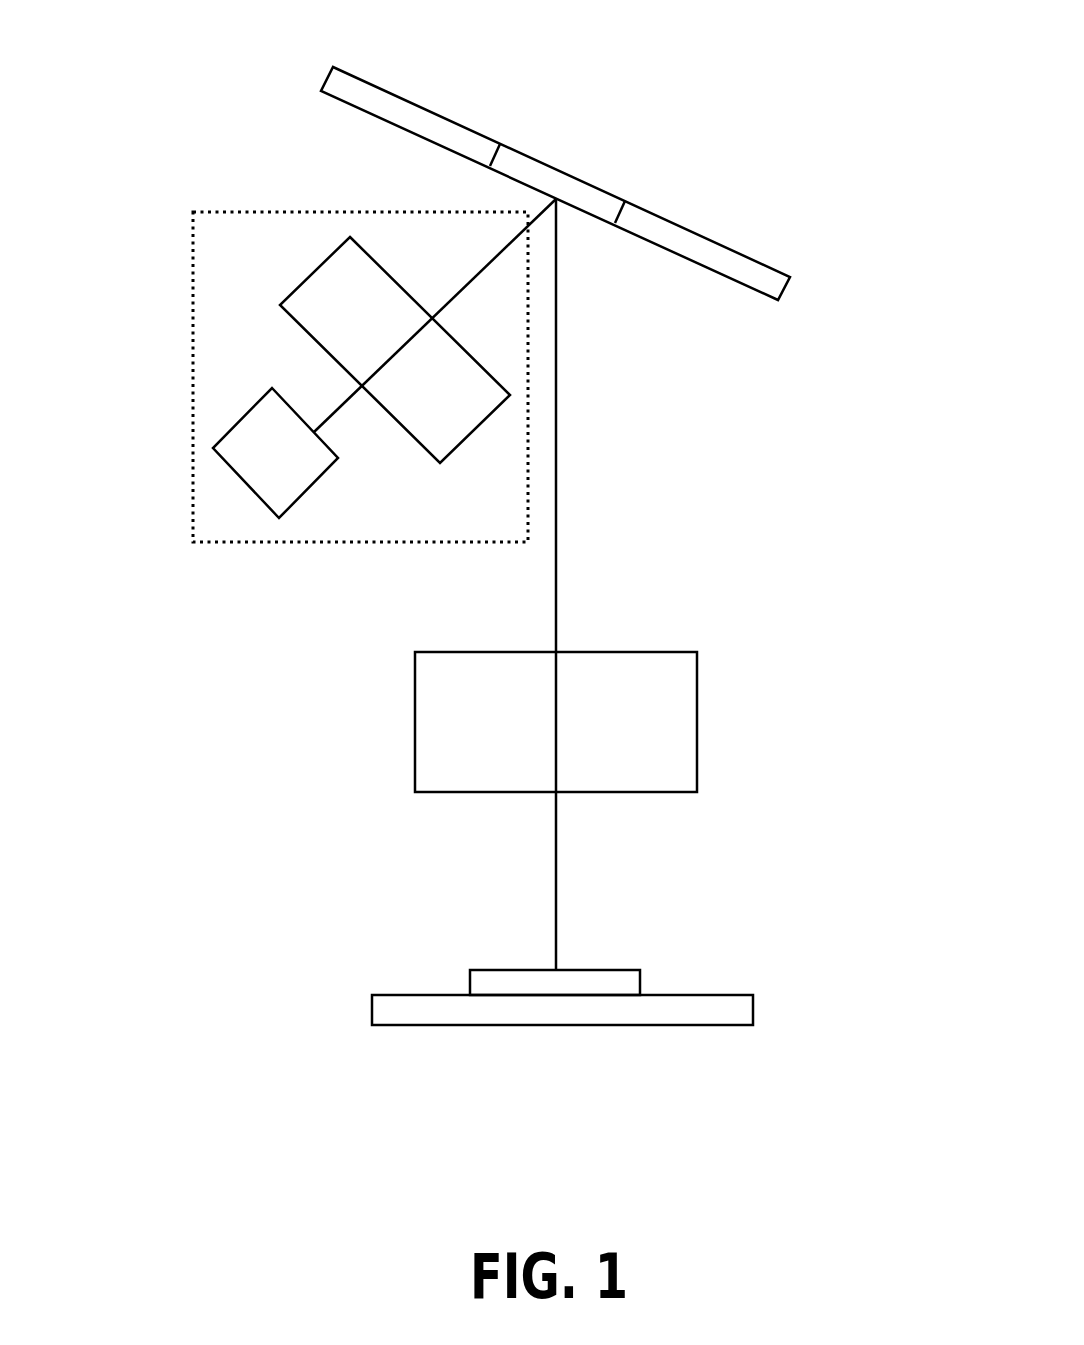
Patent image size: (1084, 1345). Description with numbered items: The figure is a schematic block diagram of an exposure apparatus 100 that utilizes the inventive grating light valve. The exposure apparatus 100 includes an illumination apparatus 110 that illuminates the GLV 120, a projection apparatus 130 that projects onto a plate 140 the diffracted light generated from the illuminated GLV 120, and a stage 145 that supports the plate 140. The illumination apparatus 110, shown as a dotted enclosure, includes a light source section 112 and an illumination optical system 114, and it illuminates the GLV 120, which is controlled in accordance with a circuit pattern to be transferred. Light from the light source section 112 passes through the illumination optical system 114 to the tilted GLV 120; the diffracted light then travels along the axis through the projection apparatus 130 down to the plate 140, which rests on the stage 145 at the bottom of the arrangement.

The exposure apparatus 100 is at (717, 24).
The illumination apparatus 110 is at (300, 211).
The light source section 112 is at (277, 475).
The illumination optical system 114 is at (345, 323).
The GLV 120 is at (585, 198).
The projection apparatus 130 is at (640, 750).
The plate 140 is at (597, 983).
The stage 145 is at (722, 1011).